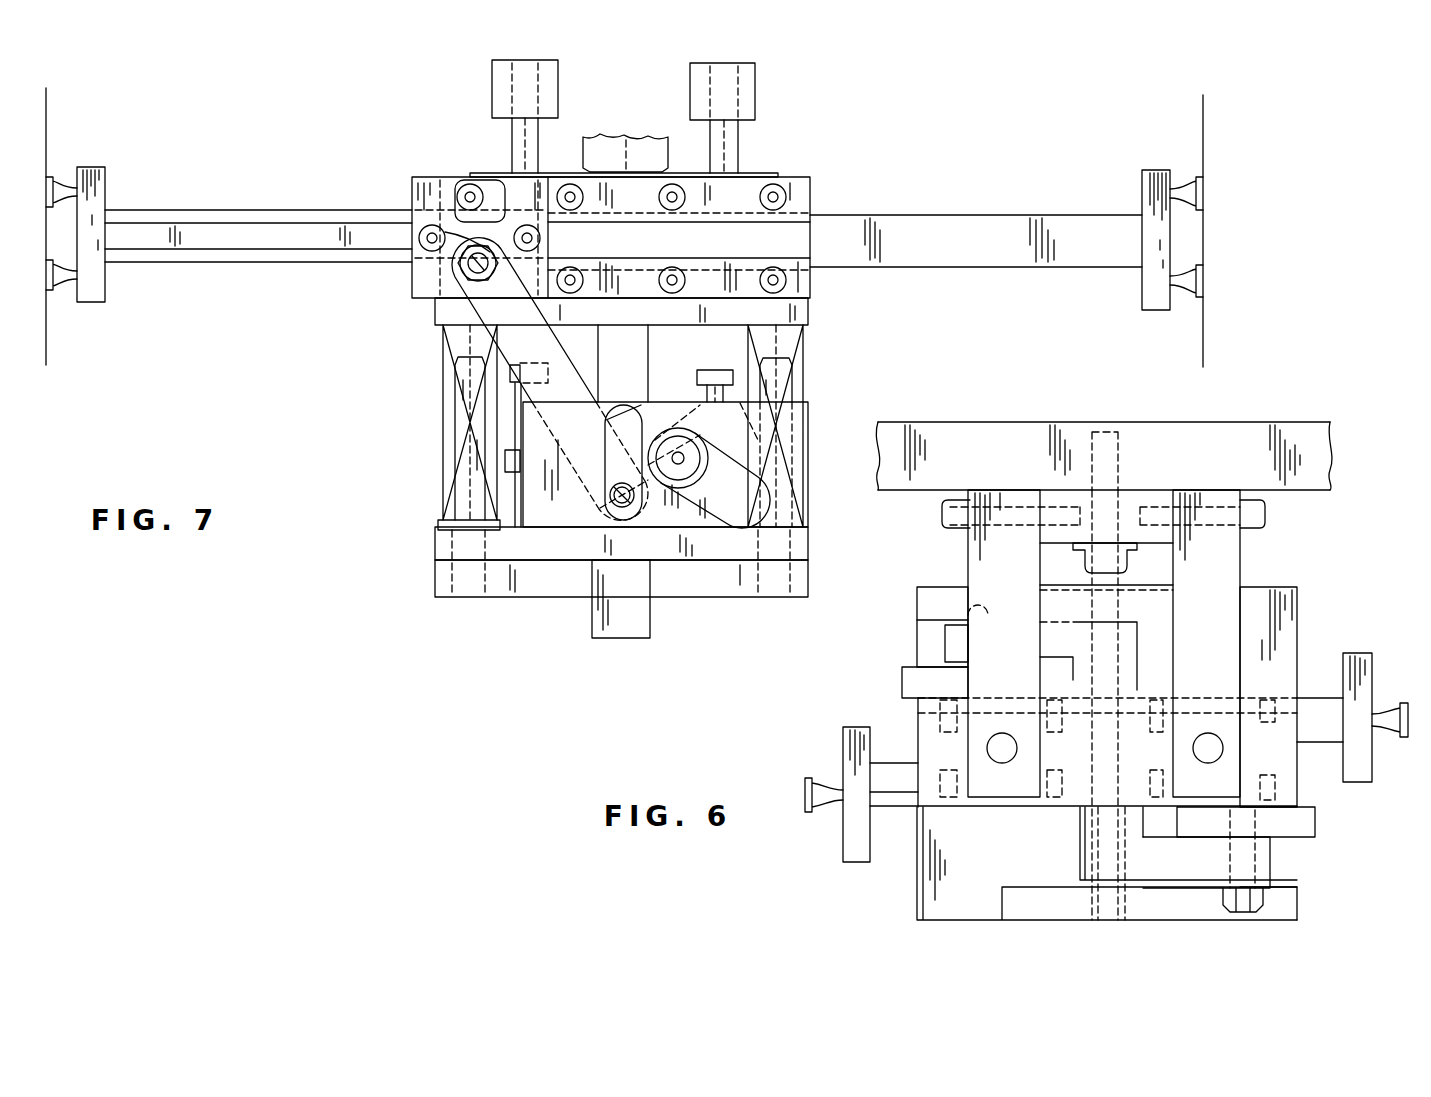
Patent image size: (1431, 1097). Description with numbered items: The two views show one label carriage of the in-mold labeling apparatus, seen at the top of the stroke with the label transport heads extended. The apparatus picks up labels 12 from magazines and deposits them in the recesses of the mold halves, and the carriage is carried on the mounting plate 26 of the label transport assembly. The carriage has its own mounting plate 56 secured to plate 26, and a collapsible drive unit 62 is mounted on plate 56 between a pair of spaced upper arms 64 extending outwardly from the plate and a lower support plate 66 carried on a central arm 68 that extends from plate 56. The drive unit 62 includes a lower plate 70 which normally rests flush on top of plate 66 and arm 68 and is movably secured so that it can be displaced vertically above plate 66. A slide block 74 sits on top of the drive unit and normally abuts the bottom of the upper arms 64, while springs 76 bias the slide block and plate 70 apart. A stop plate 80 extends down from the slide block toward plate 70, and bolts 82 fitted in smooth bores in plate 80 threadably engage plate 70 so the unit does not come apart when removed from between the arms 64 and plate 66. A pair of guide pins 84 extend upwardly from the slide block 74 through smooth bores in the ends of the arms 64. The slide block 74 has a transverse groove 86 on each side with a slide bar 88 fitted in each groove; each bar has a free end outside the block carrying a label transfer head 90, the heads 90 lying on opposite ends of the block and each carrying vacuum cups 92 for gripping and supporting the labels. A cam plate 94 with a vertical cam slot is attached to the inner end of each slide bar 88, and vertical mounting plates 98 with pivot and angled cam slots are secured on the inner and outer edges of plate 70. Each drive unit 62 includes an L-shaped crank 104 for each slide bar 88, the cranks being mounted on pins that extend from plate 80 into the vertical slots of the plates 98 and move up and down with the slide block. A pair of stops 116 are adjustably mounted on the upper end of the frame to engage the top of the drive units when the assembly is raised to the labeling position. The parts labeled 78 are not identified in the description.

In FIG. 7, the label 12 is at (48, 108).
In FIG. 6, the mounting plate 26 is at (1313, 466).
In FIG. 6, the mounting plate 56 is at (1155, 495).
In FIG. 7, the collapsible drive unit 62 is at (420, 485).
In FIG. 6, the collapsible drive unit 62 is at (1320, 562).
In FIG. 7, the upper arms 64 is at (698, 78).
In FIG. 6, the upper arms 64 is at (997, 568).
In FIG. 7, the lower support plate 66 is at (738, 590).
In FIG. 7, the central arm 68 is at (638, 622).
In FIG. 7, the lower plate 70 is at (800, 552).
In FIG. 6, the lower plate 70 is at (950, 880).
In FIG. 6, the slide block 74 is at (1283, 777).
In FIG. 7, the springs 76 is at (443, 352).
In FIG. 7, the inner column 78 is at (468, 510).
In FIG. 7, the stop plate 80 is at (505, 457).
In FIG. 7, the bolts 82 is at (512, 372).
In FIG. 7, the guide pins 84 is at (512, 136).
In FIG. 6, the guide pins 84 is at (1210, 748).
In FIG. 7, the transverse groove 86 is at (795, 242).
In FIG. 7, the slide bar 88 is at (262, 272).
In FIG. 6, the slide bar 88 is at (893, 808).
In FIG. 7, the label transfer head 90 is at (100, 283).
In FIG. 6, the label transfer head 90 is at (853, 852).
In FIG. 7, the vacuum cups 92 is at (64, 190).
In FIG. 6, the vacuum cups 92 is at (823, 788).
In FIG. 7, the cam plate 94 is at (418, 287).
In FIG. 6, the cam plate 94 is at (910, 672).
In FIG. 6, the vertical mounting plates 98 is at (937, 600).
In FIG. 7, the L-shaped crank 104 is at (572, 366).
In FIG. 6, the L-shaped crank 104 is at (1137, 668).
In FIG. 7, the stops 116 is at (610, 147).